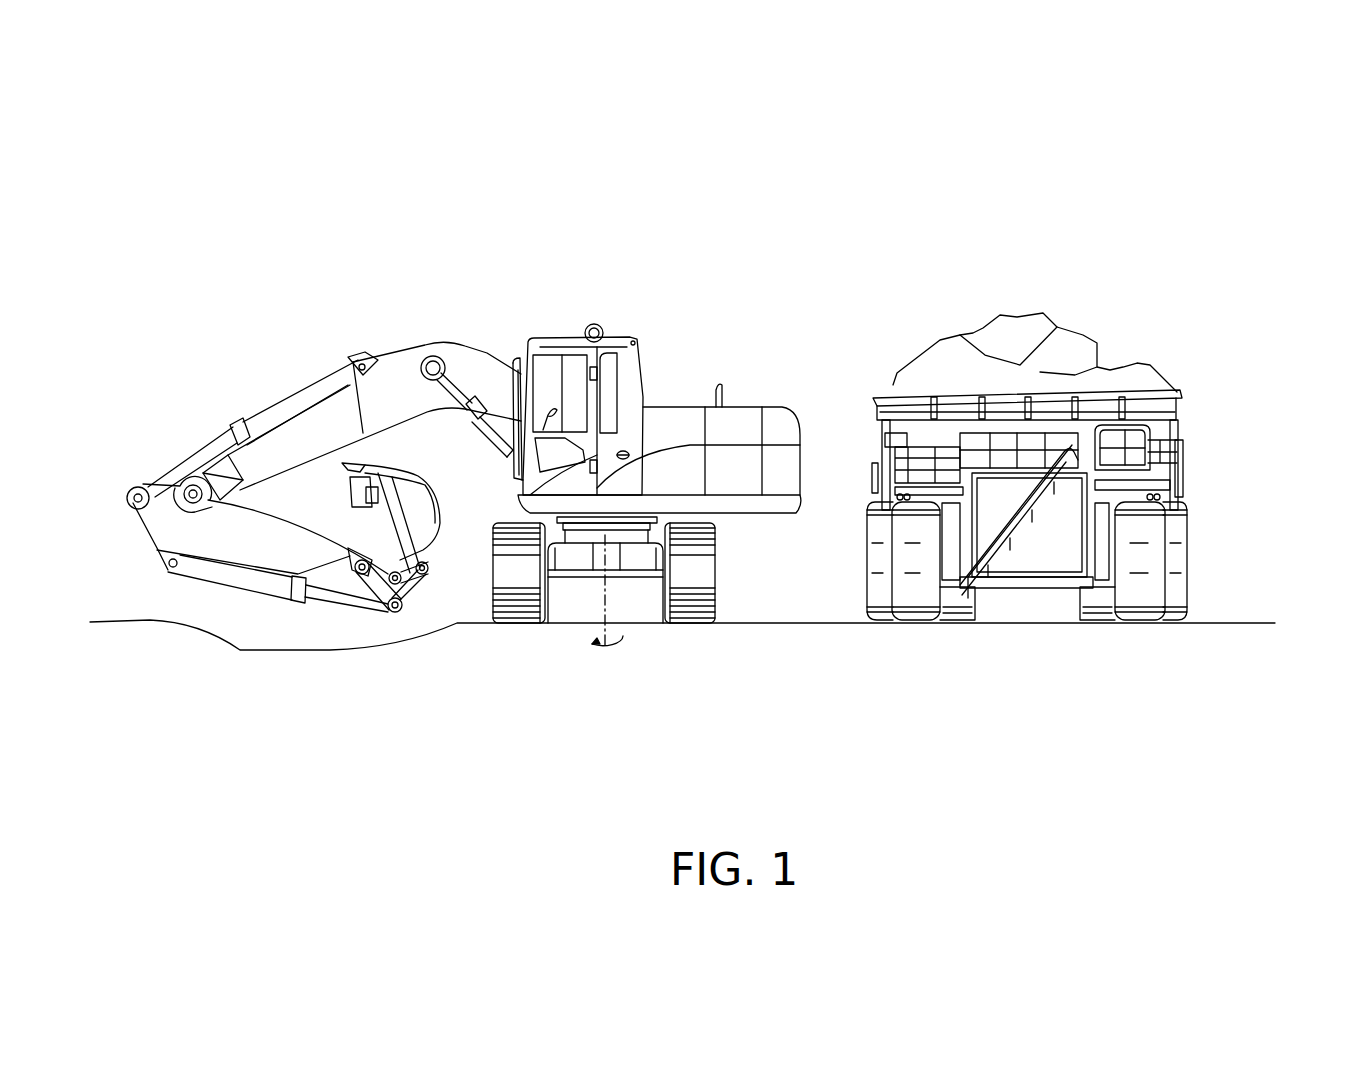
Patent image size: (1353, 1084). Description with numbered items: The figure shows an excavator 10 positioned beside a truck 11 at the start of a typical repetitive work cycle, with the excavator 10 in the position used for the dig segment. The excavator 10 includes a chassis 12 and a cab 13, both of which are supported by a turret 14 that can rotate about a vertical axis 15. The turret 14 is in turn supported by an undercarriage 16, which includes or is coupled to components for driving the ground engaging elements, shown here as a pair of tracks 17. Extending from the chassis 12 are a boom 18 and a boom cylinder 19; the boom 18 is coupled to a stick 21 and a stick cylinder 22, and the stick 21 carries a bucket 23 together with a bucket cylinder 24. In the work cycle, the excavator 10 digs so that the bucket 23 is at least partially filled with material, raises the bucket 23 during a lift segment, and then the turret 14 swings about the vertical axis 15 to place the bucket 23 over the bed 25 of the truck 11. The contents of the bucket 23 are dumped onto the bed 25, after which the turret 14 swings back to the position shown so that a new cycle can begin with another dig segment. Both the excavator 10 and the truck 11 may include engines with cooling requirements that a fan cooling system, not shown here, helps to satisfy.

The excavator 10 is at (727, 330).
The truck 11 is at (1225, 393).
The chassis 12 is at (725, 460).
The cab 13 is at (550, 357).
The turret 14 is at (582, 525).
The vertical axis 15 is at (603, 606).
The undercarriage 16 is at (648, 553).
The tracks 17 is at (512, 597).
The boom 18 is at (405, 380).
The boom cylinder 19 is at (492, 430).
The stick 21 is at (266, 533).
The stick cylinder 22 is at (298, 400).
The bucket 23 is at (422, 528).
The bucket cylinder 24 is at (222, 572).
The bed 25 is at (1108, 392).